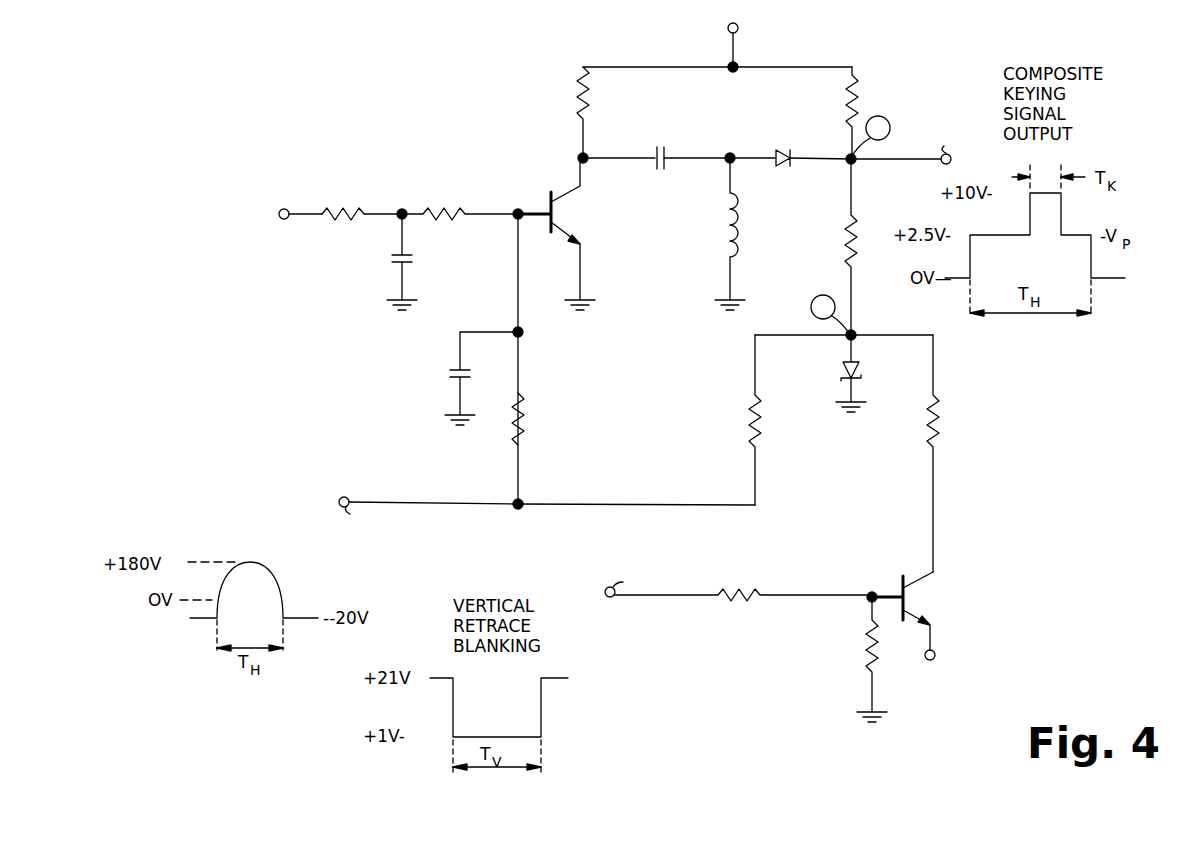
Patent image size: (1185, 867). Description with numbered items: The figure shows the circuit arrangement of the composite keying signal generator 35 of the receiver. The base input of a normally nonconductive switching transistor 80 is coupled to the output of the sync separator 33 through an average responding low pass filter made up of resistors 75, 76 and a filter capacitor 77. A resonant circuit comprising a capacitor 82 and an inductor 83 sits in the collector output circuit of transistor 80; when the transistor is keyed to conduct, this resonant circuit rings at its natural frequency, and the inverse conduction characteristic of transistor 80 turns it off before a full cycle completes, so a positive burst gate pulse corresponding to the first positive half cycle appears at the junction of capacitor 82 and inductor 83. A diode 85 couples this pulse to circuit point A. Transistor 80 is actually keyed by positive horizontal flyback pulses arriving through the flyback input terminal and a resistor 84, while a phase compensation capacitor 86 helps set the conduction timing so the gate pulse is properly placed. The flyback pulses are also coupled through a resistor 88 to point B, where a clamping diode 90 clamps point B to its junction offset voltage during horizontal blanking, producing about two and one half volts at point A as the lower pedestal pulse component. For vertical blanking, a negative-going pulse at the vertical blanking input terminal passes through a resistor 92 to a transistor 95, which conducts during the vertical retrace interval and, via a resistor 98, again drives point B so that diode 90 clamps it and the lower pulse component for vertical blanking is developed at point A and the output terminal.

The sync separator 33 is at (232, 221).
The composite keying signal generator 35 is at (304, 122).
The resistor 75 is at (343, 211).
The resistor 76 is at (441, 211).
The filter capacitor 77 is at (392, 265).
The switching transistor 80 is at (589, 224).
The capacitor 82 is at (664, 158).
The inductor 83 is at (731, 251).
The resistor 84 is at (523, 401).
The diode 85 is at (782, 178).
The phase compensation capacitor 86 is at (442, 376).
The resistor 88 is at (748, 418).
The clamping diode 90 is at (857, 374).
The resistor 92 is at (754, 595).
The transistor 95 is at (948, 608).
The resistor 98 is at (936, 416).